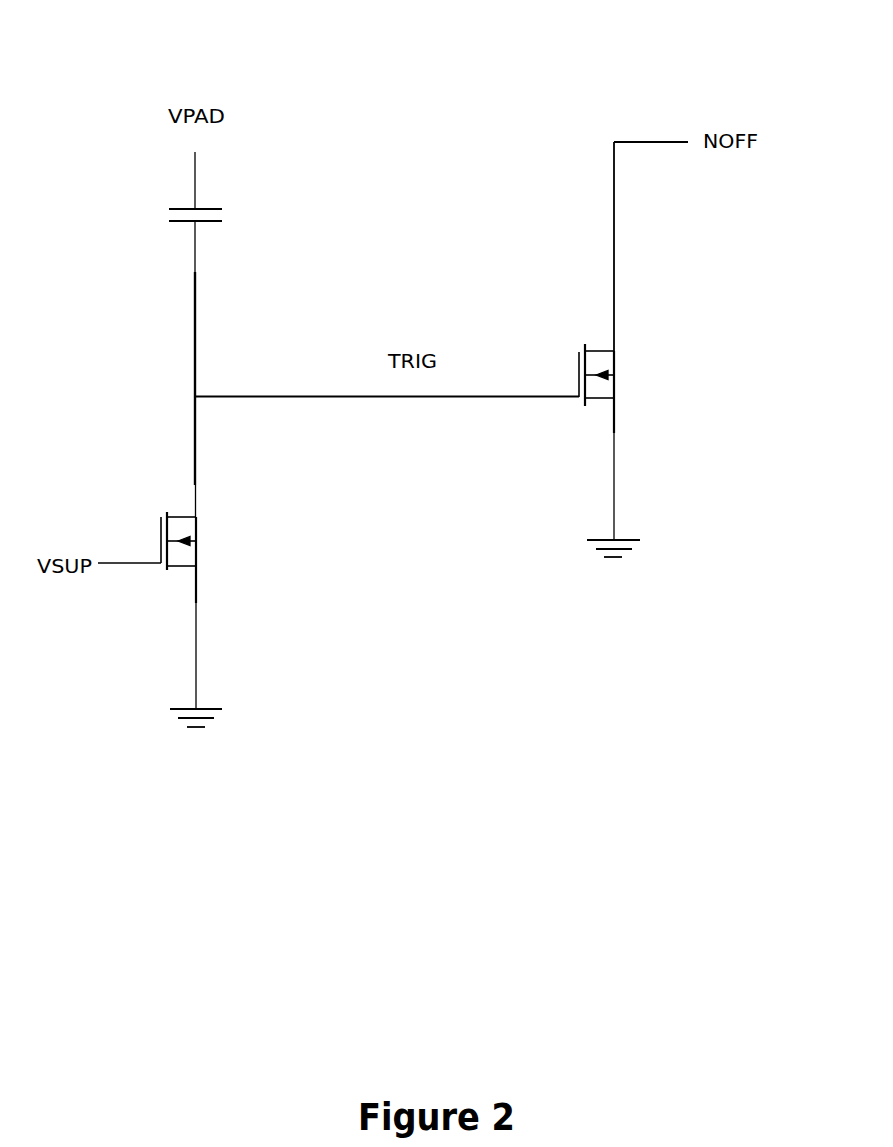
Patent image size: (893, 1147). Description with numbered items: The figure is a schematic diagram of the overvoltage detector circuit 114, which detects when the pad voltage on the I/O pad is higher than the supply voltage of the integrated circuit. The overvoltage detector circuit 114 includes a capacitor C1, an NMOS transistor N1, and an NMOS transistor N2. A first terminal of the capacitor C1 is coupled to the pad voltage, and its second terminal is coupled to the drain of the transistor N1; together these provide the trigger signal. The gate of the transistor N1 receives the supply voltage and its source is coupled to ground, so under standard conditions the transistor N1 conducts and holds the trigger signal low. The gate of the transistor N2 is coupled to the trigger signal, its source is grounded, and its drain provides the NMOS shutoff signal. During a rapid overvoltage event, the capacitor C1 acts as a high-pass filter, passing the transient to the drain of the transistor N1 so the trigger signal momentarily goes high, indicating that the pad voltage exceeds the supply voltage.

The overvoltage detector circuit 114 is at (514, 80).
The capacitor C1 is at (219, 215).
The NMOS transistor N1 is at (157, 550).
The NMOS transistor N2 is at (576, 380).